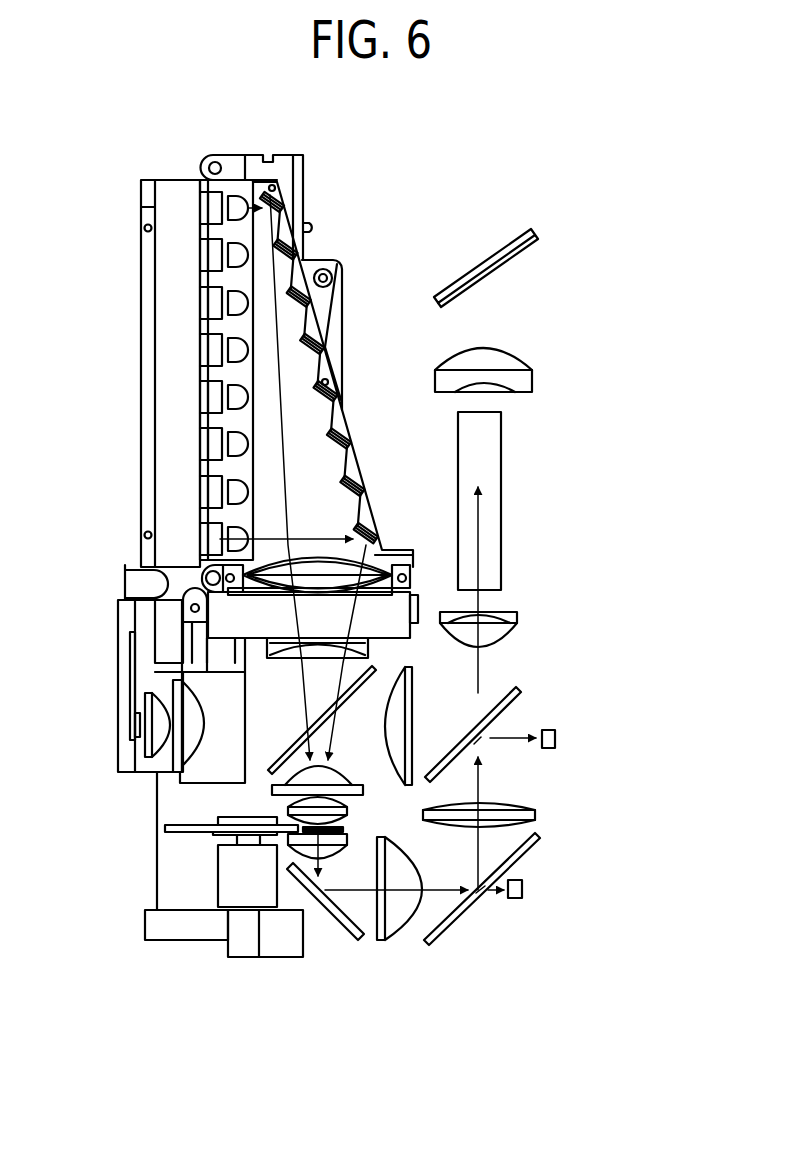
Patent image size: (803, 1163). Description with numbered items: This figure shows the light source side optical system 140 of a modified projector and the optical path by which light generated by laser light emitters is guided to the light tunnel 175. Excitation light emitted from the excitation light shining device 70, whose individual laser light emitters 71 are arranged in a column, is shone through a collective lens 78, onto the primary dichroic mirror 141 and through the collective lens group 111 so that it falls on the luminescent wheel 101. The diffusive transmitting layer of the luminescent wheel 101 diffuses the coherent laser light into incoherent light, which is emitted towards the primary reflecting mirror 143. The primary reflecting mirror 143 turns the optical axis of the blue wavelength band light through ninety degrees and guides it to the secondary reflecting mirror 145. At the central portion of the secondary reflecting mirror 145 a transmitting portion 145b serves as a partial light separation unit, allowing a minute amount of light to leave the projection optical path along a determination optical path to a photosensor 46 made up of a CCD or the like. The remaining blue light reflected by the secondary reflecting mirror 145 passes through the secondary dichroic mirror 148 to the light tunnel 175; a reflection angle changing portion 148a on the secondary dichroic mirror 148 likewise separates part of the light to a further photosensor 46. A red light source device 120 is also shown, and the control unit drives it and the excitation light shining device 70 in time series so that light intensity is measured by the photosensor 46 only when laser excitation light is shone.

The excitation light shining device 70 is at (175, 208).
The light emitting diode 71 is at (210, 355).
The collective lens 78 is at (292, 572).
The red light source device 120 is at (110, 632).
The primary dichroic mirror 141 is at (265, 762).
The collective lens group 111 is at (268, 791).
The luminescent wheel 101 is at (166, 832).
The primary reflecting mirror 143 is at (355, 938).
The secondary reflecting mirror 145 is at (540, 840).
The transmitting portion 145b is at (485, 893).
The photosensor 46 is at (597, 738).
The secondary dichroic mirror 148 is at (518, 693).
The reflection angle changing portion 148a is at (483, 742).
The light tunnel 175 is at (485, 457).
The light source side optical system 140 is at (658, 768).